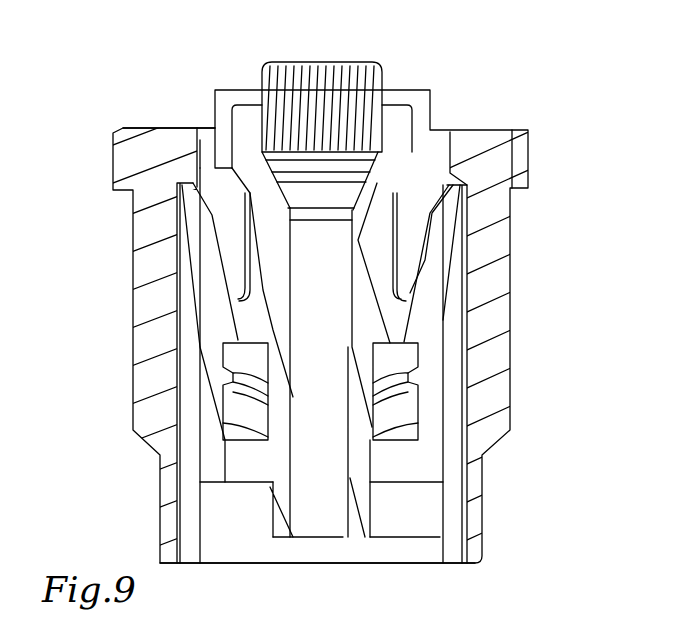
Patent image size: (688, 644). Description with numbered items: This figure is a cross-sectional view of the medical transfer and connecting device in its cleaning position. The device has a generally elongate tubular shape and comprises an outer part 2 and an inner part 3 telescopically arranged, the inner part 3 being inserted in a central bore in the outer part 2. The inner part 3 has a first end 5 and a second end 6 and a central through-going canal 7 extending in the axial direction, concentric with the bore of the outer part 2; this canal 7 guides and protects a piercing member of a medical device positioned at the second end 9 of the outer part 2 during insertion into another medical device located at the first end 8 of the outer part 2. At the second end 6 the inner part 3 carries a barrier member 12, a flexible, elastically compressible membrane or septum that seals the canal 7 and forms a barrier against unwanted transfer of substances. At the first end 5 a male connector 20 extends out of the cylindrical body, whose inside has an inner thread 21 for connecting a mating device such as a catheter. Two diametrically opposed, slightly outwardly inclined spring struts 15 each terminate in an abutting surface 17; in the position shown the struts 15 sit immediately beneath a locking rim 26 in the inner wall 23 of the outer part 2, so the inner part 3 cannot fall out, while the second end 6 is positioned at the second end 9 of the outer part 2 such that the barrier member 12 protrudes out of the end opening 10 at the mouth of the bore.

The outer part 2 is at (505, 338).
The inner part 3 is at (440, 302).
The first end 5 is at (352, 537).
The second end 6 is at (247, 90).
The central canal 7 is at (326, 331).
The first end 8 is at (428, 563).
The second end 9 is at (140, 110).
The end opening 10 is at (197, 150).
The barrier member 12 is at (325, 75).
The spring struts 15 is at (445, 227).
The abutting surface 17 is at (470, 207).
The male connector 20 is at (282, 500).
The inner thread 21 is at (403, 453).
The inner wall 23 is at (165, 300).
The locking rim 26 is at (453, 173).